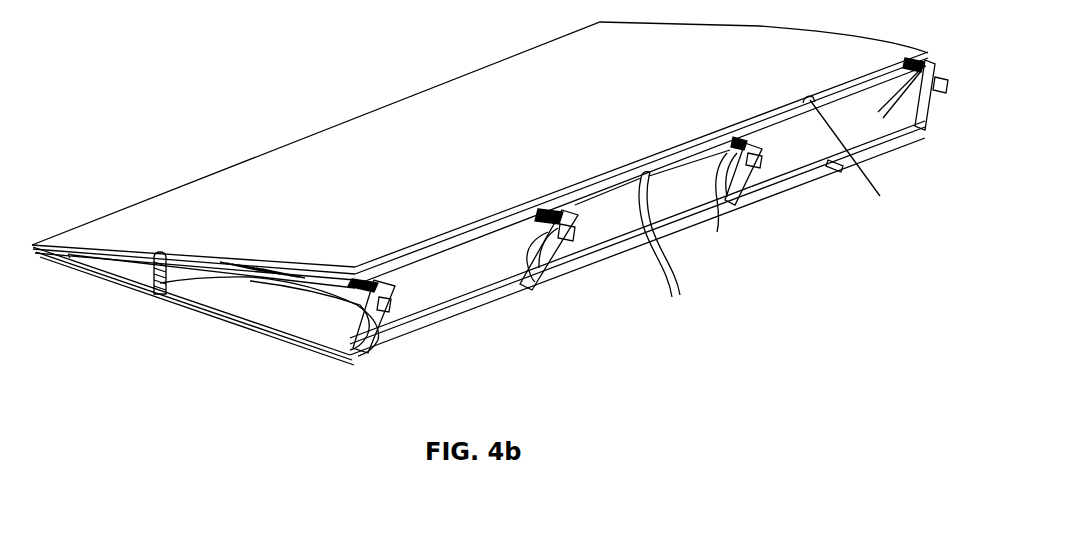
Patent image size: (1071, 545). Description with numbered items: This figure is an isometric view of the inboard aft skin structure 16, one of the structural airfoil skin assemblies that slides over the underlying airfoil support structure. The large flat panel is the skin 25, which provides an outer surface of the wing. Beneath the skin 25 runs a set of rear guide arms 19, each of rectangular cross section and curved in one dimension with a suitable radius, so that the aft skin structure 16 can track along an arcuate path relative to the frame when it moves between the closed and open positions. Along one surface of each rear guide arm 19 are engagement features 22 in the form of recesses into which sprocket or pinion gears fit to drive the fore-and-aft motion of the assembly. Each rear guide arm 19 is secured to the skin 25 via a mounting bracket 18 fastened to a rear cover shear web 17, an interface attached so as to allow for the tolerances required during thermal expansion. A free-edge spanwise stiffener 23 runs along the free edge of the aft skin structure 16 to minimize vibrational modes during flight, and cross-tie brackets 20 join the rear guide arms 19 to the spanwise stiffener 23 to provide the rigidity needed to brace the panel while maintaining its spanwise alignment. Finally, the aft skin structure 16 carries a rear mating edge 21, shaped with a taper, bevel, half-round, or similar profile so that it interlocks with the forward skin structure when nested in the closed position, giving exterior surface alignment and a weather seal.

The inboard aft skin structure 16 is at (306, 98).
The rear cover shear web 17 is at (150, 278).
The mounting bracket 18 is at (175, 283).
The rear guide arm 19 is at (250, 279).
The cross-tie bracket 20 is at (550, 236).
The rear mating edge 21 is at (836, 165).
The engagement features 22 is at (210, 253).
The free-edge spanwise stiffener 23 is at (727, 208).
The skin 25 is at (300, 192).